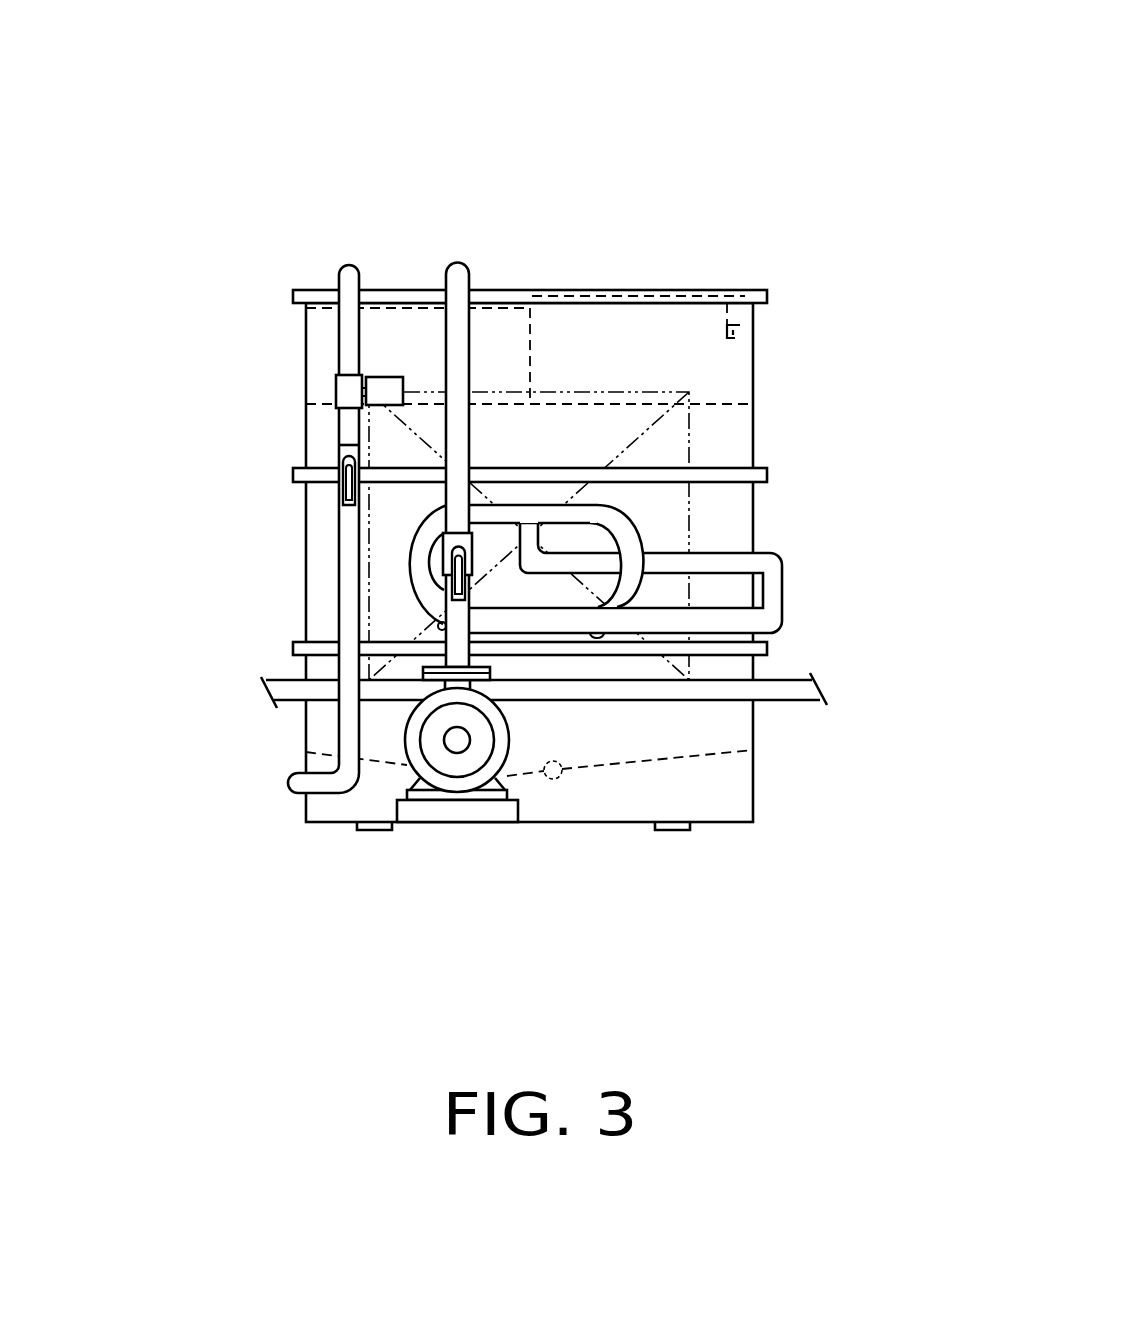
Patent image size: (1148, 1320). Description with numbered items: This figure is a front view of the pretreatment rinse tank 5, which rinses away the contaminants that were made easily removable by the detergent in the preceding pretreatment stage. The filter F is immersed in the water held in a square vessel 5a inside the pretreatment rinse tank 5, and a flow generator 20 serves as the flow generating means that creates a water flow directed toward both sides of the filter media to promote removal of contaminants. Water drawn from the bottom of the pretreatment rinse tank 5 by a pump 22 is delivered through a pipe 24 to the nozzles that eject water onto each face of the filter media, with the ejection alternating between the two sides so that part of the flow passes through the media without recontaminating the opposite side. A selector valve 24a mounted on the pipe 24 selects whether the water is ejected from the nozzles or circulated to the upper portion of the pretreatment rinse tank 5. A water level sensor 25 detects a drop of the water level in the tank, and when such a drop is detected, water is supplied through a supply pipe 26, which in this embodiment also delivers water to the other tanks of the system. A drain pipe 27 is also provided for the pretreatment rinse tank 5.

The pretreatment rinse tank 5 is at (785, 160).
The square vessel 5a is at (505, 290).
The flow generator 20 is at (240, 756).
The pump 22 is at (443, 760).
The pipe 24 is at (768, 622).
The selector valve 24a is at (448, 545).
The water level sensor 25 is at (735, 340).
The supply pipe 26 is at (347, 345).
The drain pipe 27 is at (597, 776).
The filter F is at (695, 432).